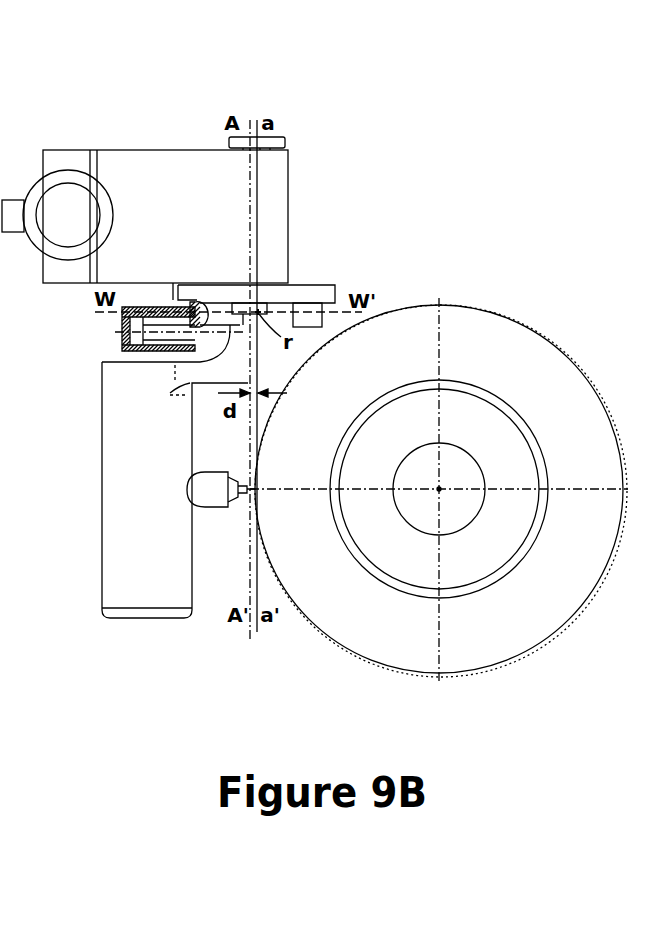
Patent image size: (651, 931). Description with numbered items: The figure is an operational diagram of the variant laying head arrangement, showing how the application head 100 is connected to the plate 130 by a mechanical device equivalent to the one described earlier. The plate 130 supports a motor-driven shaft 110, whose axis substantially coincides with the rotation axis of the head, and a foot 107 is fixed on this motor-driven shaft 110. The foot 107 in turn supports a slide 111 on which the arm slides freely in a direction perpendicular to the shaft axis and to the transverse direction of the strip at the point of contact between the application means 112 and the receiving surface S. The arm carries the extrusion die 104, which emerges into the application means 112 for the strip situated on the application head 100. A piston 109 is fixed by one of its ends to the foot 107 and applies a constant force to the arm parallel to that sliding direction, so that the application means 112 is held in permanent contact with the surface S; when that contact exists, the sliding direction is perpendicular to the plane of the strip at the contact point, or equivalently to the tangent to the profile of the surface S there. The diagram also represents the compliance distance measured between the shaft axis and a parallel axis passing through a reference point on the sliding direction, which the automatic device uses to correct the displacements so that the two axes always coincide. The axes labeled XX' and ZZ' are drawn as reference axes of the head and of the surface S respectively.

The sensor housing / bracket 130 is at (175, 150).
The axis XX' is at (74, 175).
The adjustment cap 110 is at (277, 142).
The mounting plate 107 is at (313, 283).
The pin 111 is at (283, 316).
The bearing / bushing 109 is at (128, 331).
The sensor holder body 104 is at (152, 492).
The sensor 100 is at (210, 490).
The sensor tip 112 is at (248, 497).
The sprocket / wheel S is at (521, 323).
The wheel axis ZZ' is at (517, 584).